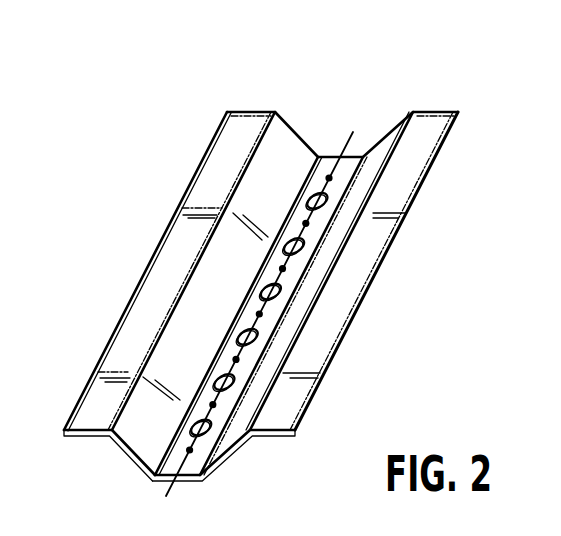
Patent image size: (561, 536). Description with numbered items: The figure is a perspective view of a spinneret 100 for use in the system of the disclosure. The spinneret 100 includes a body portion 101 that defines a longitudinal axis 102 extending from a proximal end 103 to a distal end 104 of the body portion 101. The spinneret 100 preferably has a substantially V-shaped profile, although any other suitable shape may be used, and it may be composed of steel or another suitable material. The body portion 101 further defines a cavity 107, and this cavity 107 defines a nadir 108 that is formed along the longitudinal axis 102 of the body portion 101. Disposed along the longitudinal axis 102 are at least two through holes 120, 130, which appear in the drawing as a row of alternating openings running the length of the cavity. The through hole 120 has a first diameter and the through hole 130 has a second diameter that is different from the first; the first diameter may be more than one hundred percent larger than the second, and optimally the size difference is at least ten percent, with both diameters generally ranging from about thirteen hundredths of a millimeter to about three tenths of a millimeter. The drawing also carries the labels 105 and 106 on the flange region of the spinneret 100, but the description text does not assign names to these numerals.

The spinneret 100 is at (406, 53).
The body portion 101 is at (187, 157).
The longitudinal axis 102 is at (167, 495).
The proximal end 103 is at (275, 438).
The distal end 104 is at (445, 111).
The first flange top surface 105 is at (115, 355).
The first flange end edge 106 is at (85, 437).
The cavity 107 is at (295, 102).
The nadir 108 is at (331, 156).
The through hole 120 is at (330, 180).
The through hole 130 is at (323, 208).